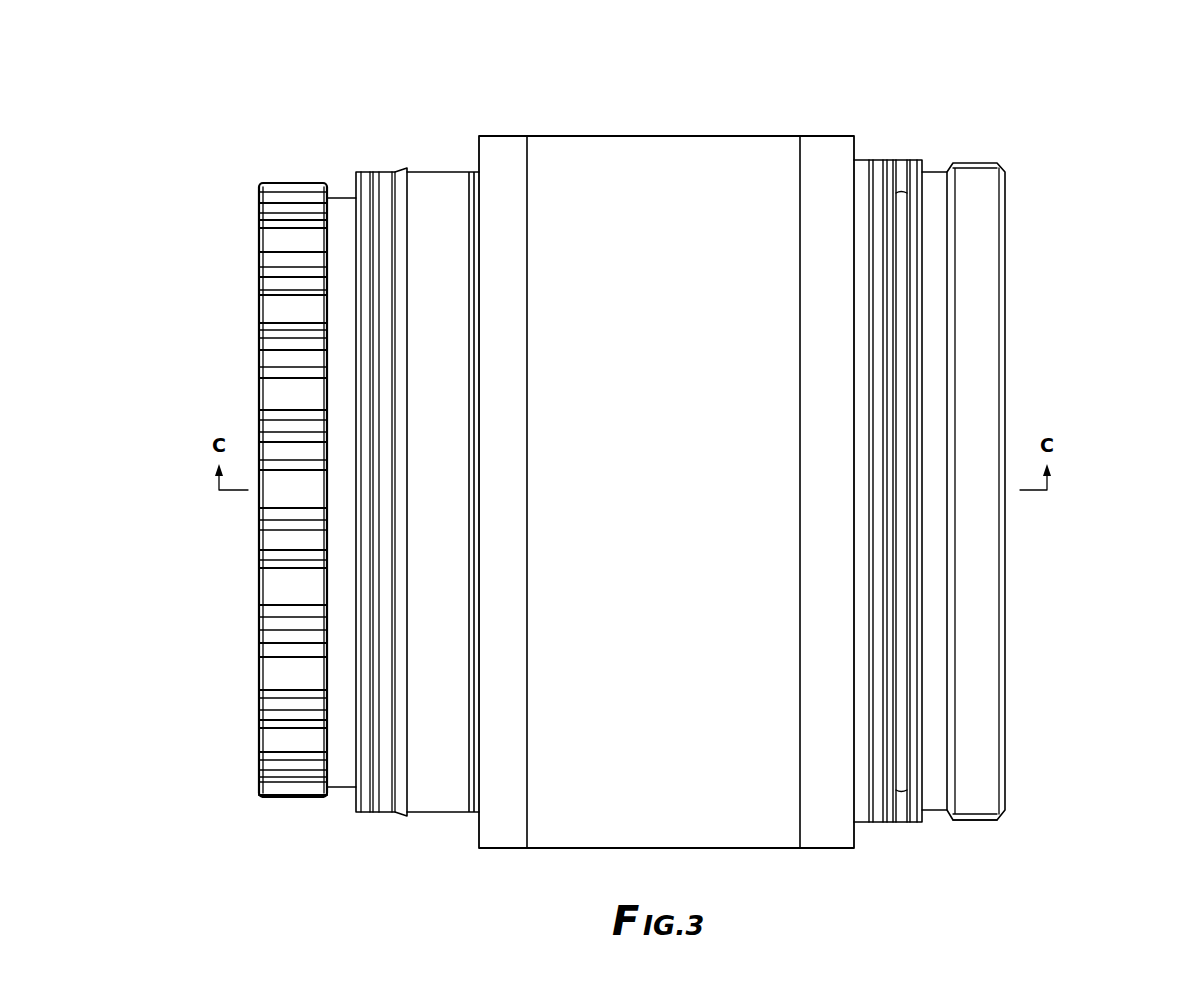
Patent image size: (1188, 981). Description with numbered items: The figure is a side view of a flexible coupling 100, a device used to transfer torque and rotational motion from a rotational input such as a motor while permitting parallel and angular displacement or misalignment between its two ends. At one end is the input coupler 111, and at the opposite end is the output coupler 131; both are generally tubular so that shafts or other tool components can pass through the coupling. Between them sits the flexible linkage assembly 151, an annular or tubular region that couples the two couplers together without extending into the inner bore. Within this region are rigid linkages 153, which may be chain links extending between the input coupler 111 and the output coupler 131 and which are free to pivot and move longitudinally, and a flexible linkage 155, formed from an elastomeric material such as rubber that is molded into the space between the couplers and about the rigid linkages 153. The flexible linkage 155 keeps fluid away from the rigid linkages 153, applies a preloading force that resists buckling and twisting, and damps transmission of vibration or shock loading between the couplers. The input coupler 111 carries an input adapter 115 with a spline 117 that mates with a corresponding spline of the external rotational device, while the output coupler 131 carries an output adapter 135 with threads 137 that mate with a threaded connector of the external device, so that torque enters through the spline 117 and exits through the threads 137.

The flexible coupling 100 is at (170, 105).
The input coupler 111 is at (277, 86).
The input adapter 115 is at (232, 659).
The spline 117 is at (296, 802).
The flexible linkage assembly 151 is at (583, 84).
The rigid linkages 153 is at (650, 162).
The flexible linkage 155 is at (760, 839).
The output coupler 131 is at (775, 84).
The output adapter 135 is at (1036, 564).
The threads 137 is at (970, 821).